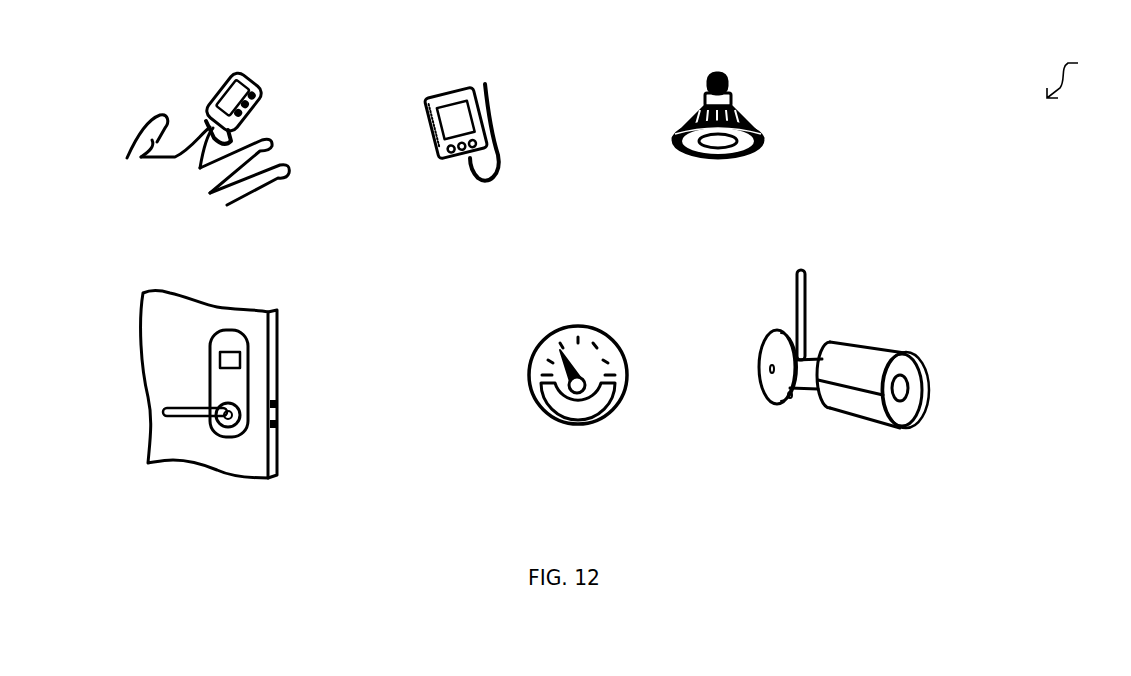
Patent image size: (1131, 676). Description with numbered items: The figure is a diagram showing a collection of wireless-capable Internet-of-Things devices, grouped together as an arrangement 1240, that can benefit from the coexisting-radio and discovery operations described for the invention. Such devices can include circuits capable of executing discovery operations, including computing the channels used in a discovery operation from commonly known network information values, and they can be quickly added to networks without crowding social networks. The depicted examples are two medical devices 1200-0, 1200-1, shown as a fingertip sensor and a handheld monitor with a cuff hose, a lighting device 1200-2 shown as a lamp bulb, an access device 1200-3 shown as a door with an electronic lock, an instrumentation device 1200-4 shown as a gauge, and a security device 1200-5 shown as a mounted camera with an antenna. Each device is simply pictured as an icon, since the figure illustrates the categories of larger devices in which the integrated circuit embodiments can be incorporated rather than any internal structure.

The medical device 1200-0 is at (220, 93).
The medical device 1200-1 is at (457, 85).
The lighting device 1200-2 is at (738, 107).
The access device 1200-3 is at (247, 368).
The instrumentation device 1200-4 is at (557, 423).
The security device 1200-5 is at (855, 403).
The device environment 1240 is at (1084, 77).